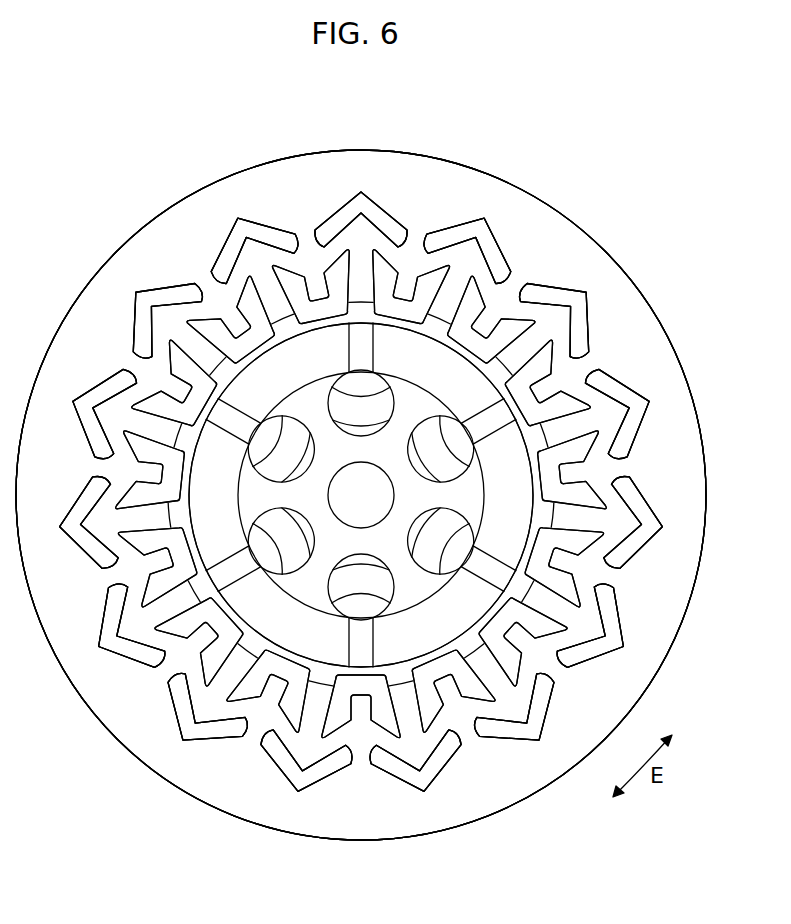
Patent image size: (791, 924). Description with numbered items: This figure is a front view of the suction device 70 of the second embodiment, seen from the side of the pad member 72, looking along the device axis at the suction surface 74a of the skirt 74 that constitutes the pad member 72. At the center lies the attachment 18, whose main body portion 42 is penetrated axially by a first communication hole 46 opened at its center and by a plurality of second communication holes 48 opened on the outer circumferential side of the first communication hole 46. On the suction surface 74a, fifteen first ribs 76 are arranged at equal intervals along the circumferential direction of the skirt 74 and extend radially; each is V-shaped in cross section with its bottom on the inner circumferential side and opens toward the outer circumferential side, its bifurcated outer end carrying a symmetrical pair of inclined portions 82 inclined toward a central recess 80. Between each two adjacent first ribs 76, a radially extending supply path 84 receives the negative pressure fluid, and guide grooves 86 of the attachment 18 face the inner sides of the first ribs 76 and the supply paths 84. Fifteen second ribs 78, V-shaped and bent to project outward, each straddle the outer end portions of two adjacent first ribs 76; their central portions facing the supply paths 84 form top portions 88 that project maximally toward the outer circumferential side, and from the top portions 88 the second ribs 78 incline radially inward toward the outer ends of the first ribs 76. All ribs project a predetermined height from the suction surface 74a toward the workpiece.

The attachment 18 is at (326, 628).
The main body portion 42 is at (314, 588).
The first communication hole 46 is at (375, 497).
The second communication holes 48 is at (427, 433).
The suction device 70 is at (311, 106).
The pad member 72 is at (462, 148).
The skirt 74 is at (148, 258).
The suction surface 74a is at (477, 803).
The first ribs 76 is at (308, 322).
The second ribs 78 is at (257, 232).
The recess 80 is at (344, 218).
The inclined portions 82 is at (193, 316).
The supply paths 84 is at (280, 292).
The guide grooves 86 is at (224, 418).
The top portions 88 is at (238, 216).